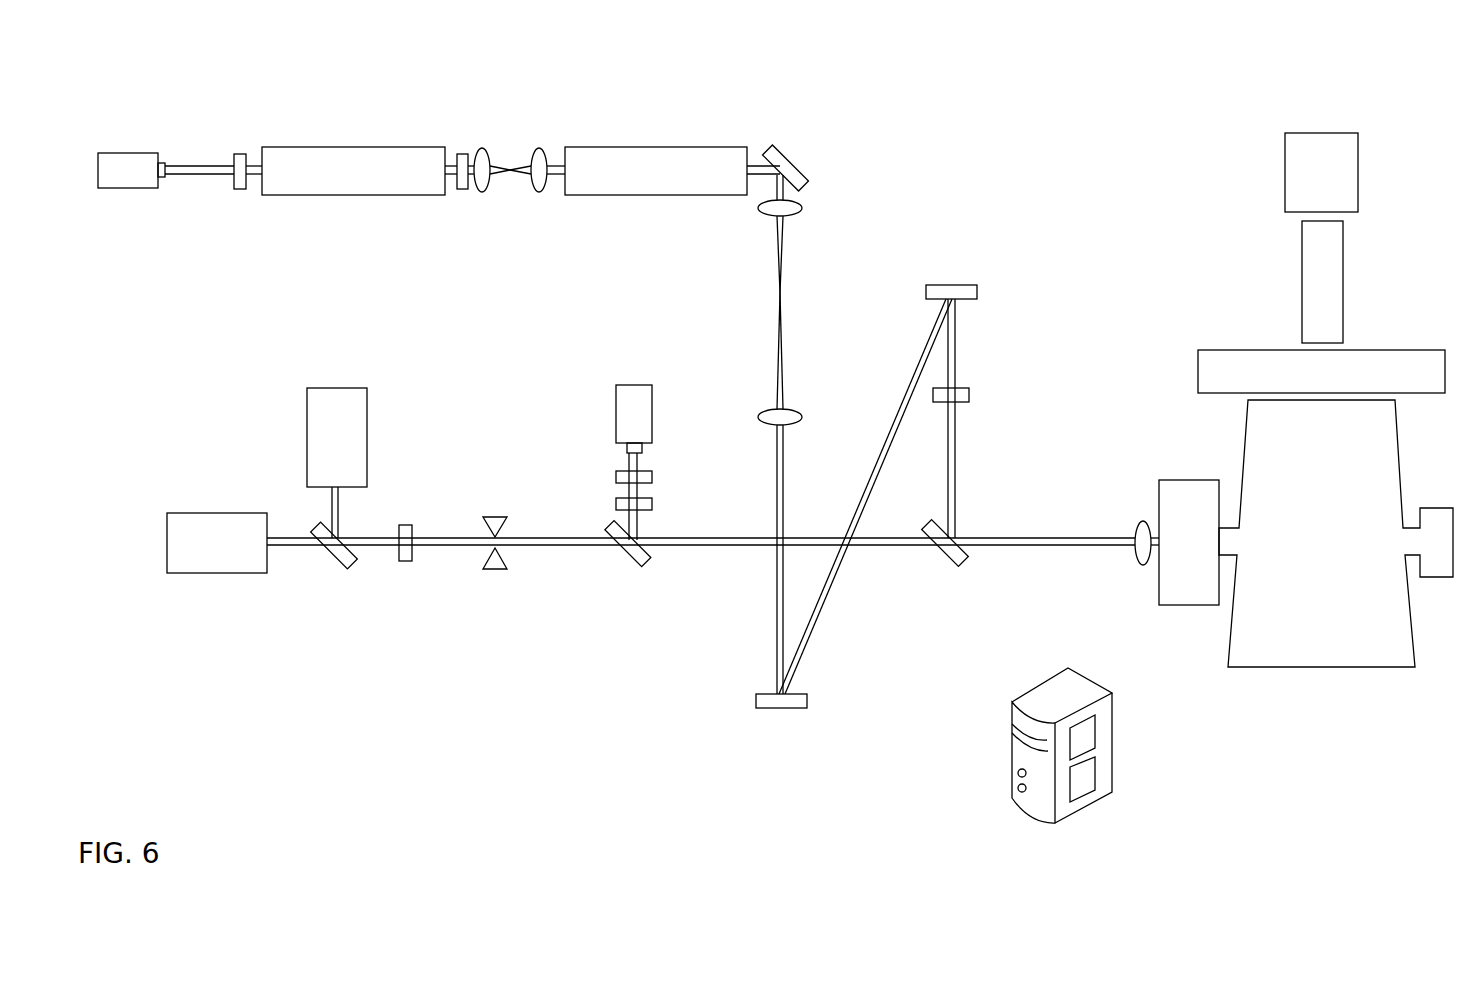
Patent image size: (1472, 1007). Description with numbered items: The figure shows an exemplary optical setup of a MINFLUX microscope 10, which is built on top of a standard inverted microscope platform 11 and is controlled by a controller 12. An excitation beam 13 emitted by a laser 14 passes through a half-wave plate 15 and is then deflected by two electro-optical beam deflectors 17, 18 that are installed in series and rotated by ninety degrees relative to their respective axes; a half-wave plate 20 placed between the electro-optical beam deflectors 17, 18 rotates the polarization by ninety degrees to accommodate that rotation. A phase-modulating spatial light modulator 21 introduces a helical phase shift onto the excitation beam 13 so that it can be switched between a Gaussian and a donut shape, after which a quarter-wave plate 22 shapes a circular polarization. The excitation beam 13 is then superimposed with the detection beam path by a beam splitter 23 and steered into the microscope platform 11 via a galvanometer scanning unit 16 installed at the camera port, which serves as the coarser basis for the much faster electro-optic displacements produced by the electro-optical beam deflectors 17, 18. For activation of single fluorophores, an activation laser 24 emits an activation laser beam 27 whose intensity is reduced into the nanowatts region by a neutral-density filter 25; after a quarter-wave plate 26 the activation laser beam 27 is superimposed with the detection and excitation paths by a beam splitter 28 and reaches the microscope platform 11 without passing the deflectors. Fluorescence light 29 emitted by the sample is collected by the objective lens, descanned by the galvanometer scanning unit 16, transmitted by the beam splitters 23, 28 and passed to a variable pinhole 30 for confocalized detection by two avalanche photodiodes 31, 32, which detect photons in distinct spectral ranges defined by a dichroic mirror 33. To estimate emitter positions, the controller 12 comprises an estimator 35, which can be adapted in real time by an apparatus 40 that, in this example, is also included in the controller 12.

The MINFLUX microscope 10 is at (1050, 135).
The microscope platform 11 is at (1321, 667).
The controller 12 is at (1068, 752).
The excitation beam 13 is at (202, 166).
The laser 14 is at (127, 187).
The λ/2-plate 15 is at (234, 187).
The galvanometer scanning unit 16 is at (1188, 480).
The electro-optical beam deflector 17 is at (352, 148).
The electro-optical beam deflector 18 is at (650, 147).
The λ/2-plate 20 is at (467, 153).
The phase-modulating spatial light modulator 21 is at (782, 707).
The λ/4-plate 22 is at (968, 389).
The beam splitter 23 is at (948, 556).
The activation laser 24 is at (617, 413).
The neutral-density filter 25 is at (617, 471).
The λ/4 plate 26 is at (651, 498).
The activation laser beam 27 is at (637, 524).
The beam splitter 28 is at (632, 558).
The fluorescence light 29 is at (553, 547).
The variable pinhole 30 is at (495, 517).
The avalanche photodiode 31 is at (214, 513).
The avalanche photodiode 32 is at (307, 435).
The dichroic mirror 33 is at (336, 555).
The estimator 35 is at (1095, 731).
The apparatus 40 is at (1095, 773).